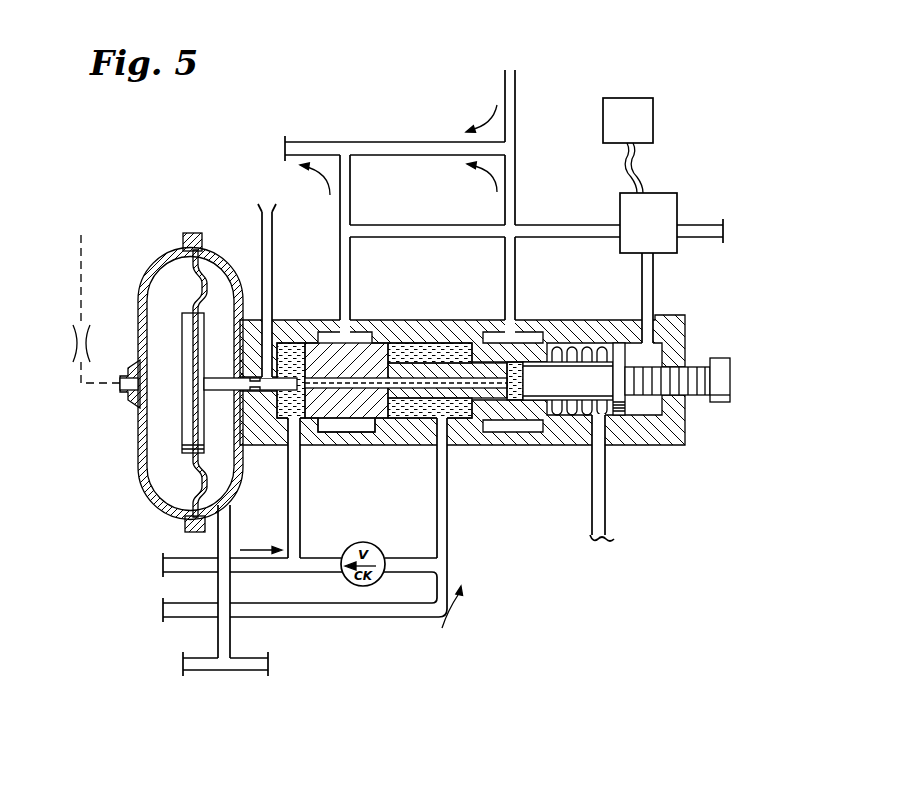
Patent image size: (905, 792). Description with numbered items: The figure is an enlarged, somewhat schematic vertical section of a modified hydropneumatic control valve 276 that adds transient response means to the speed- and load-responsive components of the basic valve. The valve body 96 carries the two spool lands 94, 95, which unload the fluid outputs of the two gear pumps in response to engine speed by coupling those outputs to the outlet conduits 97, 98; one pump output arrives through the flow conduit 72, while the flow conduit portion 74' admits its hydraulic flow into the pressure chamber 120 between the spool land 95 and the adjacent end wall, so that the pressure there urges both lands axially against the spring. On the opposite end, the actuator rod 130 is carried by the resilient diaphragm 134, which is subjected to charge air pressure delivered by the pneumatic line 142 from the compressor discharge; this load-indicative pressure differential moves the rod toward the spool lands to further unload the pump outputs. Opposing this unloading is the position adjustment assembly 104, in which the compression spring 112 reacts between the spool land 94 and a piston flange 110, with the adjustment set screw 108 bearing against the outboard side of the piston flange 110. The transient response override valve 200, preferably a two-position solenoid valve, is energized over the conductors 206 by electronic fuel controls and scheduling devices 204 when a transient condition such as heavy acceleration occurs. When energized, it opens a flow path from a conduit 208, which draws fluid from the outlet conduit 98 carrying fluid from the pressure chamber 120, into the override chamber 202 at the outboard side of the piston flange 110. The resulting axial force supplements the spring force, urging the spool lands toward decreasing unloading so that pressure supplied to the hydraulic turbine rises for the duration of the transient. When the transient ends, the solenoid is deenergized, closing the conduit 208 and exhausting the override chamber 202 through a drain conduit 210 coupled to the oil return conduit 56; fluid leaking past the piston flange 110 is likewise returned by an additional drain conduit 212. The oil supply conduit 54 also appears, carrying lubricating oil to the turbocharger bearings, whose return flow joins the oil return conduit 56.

The oil supply conduit 54 is at (383, 142).
The oil return conduit 56 is at (238, 670).
The flow conduit 72 is at (330, 620).
The flow conduit portion 74' is at (320, 488).
The spool land 94 is at (486, 370).
The spool land 95 is at (352, 352).
The valve body 96 is at (390, 440).
The outlet conduit 97 is at (518, 168).
The outlet conduit 98 is at (352, 210).
The position adjustment assembly 104 is at (573, 455).
The set screw 108 is at (693, 375).
The piston flange 110 is at (620, 343).
The compression spring 112 is at (565, 343).
The pressure chamber 120 is at (292, 352).
The actuator rod 130 is at (217, 393).
The resilient diaphragm 134 is at (192, 468).
The pneumatic line 142 is at (78, 282).
The transient response override valve 200 is at (678, 203).
The override chamber 202 is at (642, 404).
The electronic fuel controls and scheduling devices 204 is at (655, 118).
The conductors 206 is at (643, 172).
The conduit 208 is at (540, 214).
The drain conduit 210 is at (707, 237).
The drain conduit 212 is at (605, 498).
The modified control valve 276 is at (510, 495).